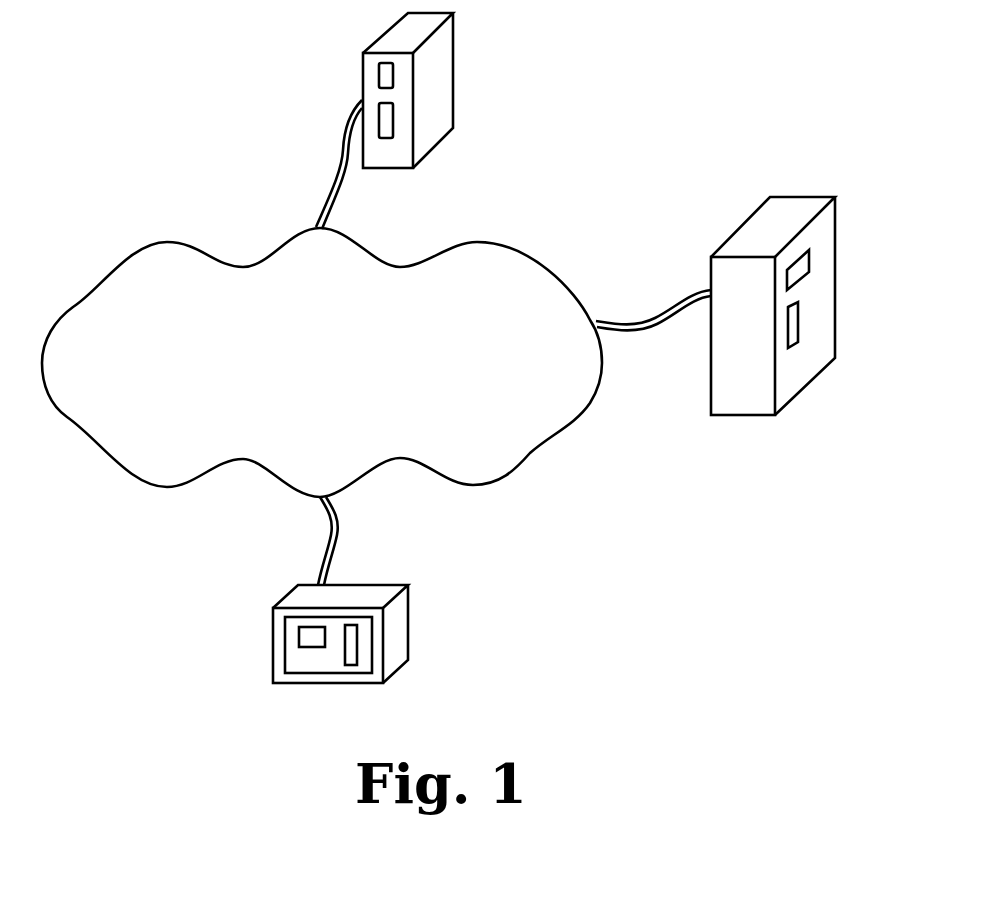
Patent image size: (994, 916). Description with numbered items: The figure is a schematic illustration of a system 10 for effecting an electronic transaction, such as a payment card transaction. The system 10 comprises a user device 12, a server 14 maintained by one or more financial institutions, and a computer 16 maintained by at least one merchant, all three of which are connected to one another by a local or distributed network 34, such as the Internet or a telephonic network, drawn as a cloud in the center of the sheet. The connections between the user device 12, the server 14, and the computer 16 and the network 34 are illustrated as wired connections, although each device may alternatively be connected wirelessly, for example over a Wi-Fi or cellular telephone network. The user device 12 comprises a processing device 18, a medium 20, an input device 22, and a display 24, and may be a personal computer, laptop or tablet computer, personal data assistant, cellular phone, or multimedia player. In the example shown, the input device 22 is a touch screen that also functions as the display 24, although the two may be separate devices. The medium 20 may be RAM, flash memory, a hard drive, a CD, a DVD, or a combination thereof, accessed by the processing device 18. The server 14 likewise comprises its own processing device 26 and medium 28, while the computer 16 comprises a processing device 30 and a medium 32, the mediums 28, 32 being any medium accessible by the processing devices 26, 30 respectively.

The system 10 is at (615, 560).
The user device 12 is at (400, 615).
The server 14 is at (453, 68).
The computer 16 is at (830, 228).
The processing device 18 is at (308, 634).
The medium 20 is at (350, 657).
The input device 22 is at (312, 663).
The display 24 is at (365, 623).
The processing device 26 is at (380, 75).
The medium 28 is at (393, 120).
The processing device 30 is at (808, 265).
The medium 32 is at (797, 333).
The network 34 is at (497, 483).